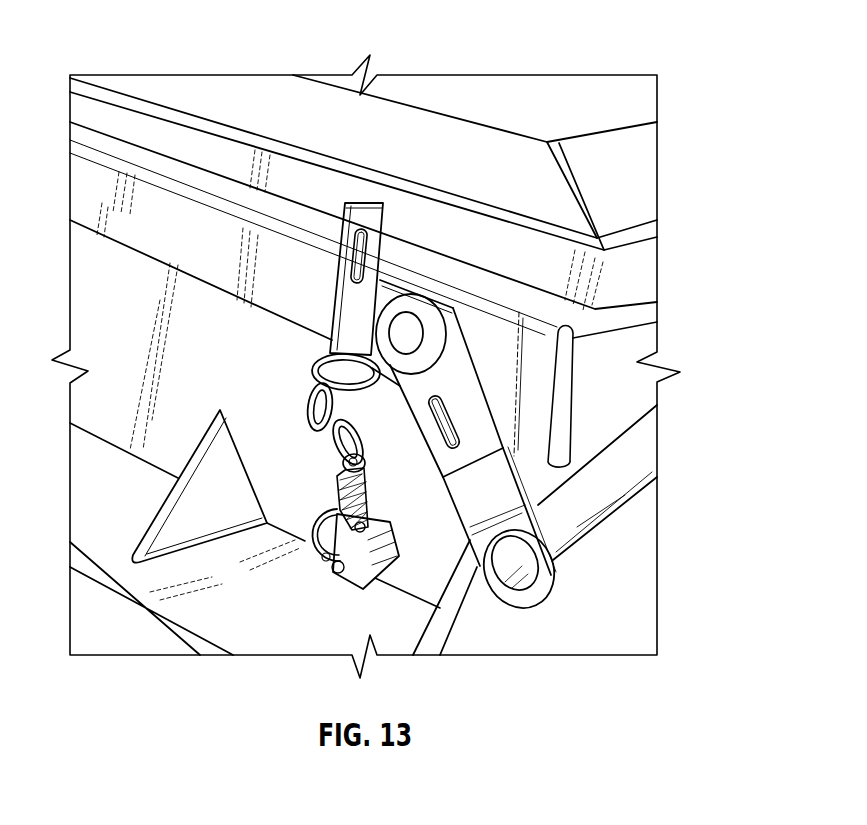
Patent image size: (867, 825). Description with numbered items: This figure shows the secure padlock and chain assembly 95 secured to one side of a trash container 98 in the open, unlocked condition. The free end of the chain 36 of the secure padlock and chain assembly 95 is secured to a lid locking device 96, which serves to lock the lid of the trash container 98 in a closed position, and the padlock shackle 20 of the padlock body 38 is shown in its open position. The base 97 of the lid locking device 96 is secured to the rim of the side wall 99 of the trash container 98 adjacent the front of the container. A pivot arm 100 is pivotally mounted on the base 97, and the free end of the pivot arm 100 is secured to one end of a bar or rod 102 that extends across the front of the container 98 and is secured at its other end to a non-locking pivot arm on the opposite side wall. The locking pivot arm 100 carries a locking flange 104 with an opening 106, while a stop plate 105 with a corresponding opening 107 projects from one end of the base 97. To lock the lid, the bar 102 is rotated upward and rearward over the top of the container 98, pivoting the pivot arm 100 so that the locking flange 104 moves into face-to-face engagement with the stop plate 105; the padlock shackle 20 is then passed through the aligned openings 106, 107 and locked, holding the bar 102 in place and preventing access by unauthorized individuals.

The padlock shackle 20 is at (333, 513).
The chain 36 is at (364, 420).
The latch body 38 is at (381, 540).
The secure padlock and chain assembly 95 is at (334, 486).
The lid locking device 96 is at (421, 285).
The base 97 is at (382, 280).
The trash container 98 is at (628, 559).
The side wall 99 is at (230, 371).
The pivot arm 100 is at (467, 493).
The bar or rod 102 is at (643, 452).
The locking flange 104 is at (465, 393).
The stop plate 105 is at (362, 207).
The opening 106 is at (467, 428).
The opening 107 is at (347, 264).